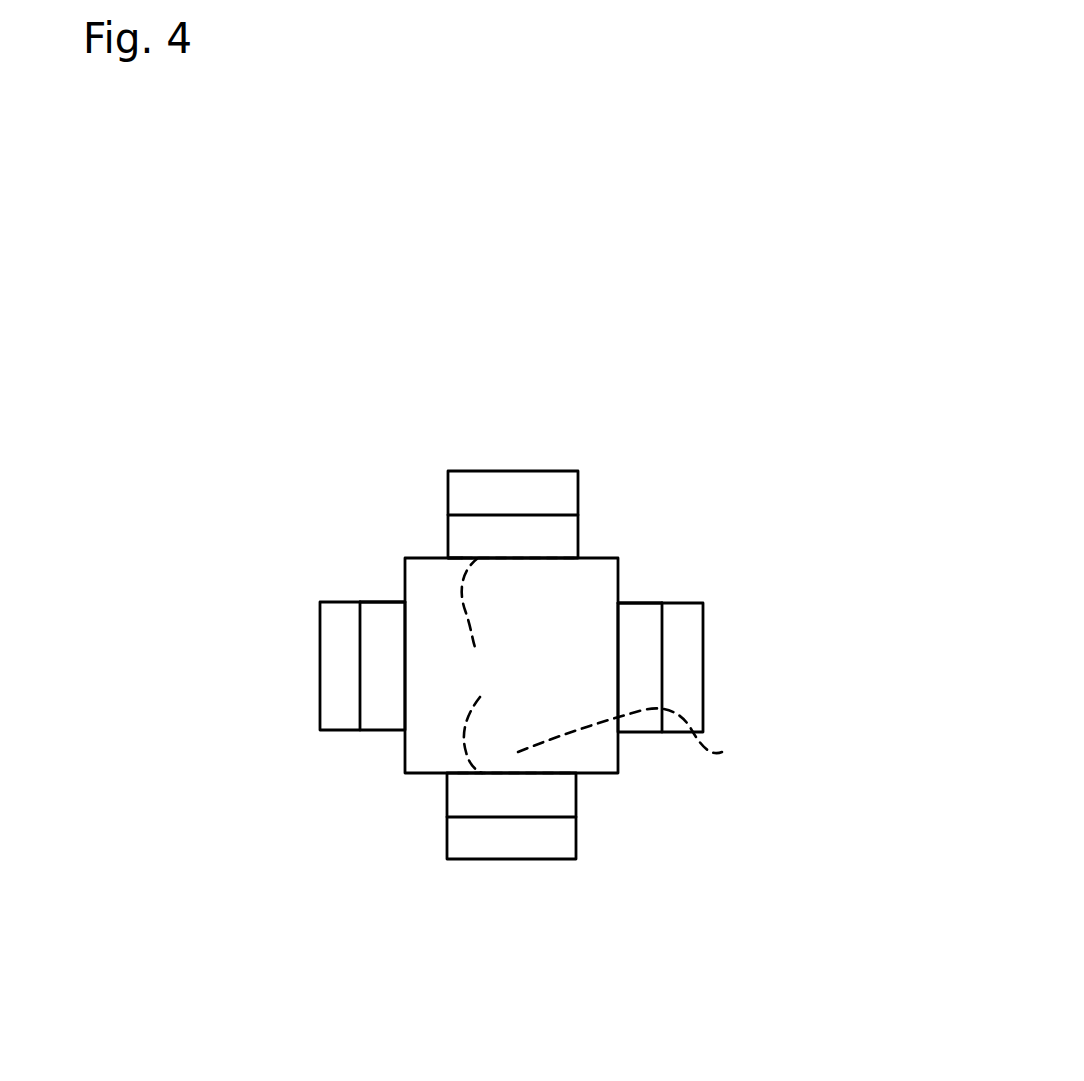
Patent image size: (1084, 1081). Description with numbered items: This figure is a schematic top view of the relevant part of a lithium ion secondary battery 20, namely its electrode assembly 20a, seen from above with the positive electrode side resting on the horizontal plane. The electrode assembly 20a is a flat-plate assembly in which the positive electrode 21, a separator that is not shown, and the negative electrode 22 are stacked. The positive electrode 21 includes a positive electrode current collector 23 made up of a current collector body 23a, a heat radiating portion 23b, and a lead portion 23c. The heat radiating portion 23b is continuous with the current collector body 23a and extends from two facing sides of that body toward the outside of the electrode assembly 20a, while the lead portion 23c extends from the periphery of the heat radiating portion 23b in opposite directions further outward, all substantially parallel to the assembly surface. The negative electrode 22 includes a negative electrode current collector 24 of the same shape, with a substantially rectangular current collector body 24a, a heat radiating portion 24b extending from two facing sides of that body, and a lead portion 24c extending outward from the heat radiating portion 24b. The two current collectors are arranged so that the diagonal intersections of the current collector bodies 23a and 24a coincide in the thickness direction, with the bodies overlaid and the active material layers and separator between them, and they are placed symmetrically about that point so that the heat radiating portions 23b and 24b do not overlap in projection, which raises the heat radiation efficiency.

The lithium ion secondary battery 20 is at (227, 203).
The electrode assembly 20a is at (775, 360).
The positive electrode 21 is at (732, 815).
The negative electrode 22 is at (318, 553).
The positive electrode current collector 23 is at (862, 535).
The current collector body 23a is at (722, 752).
The heat radiating portion 23b is at (373, 668).
The lead portion 23c is at (335, 703).
The negative electrode current collector 24 is at (725, 357).
The current collector body 24a is at (528, 577).
The heat radiating portion 24b is at (522, 547).
The lead portion 24c is at (473, 490).